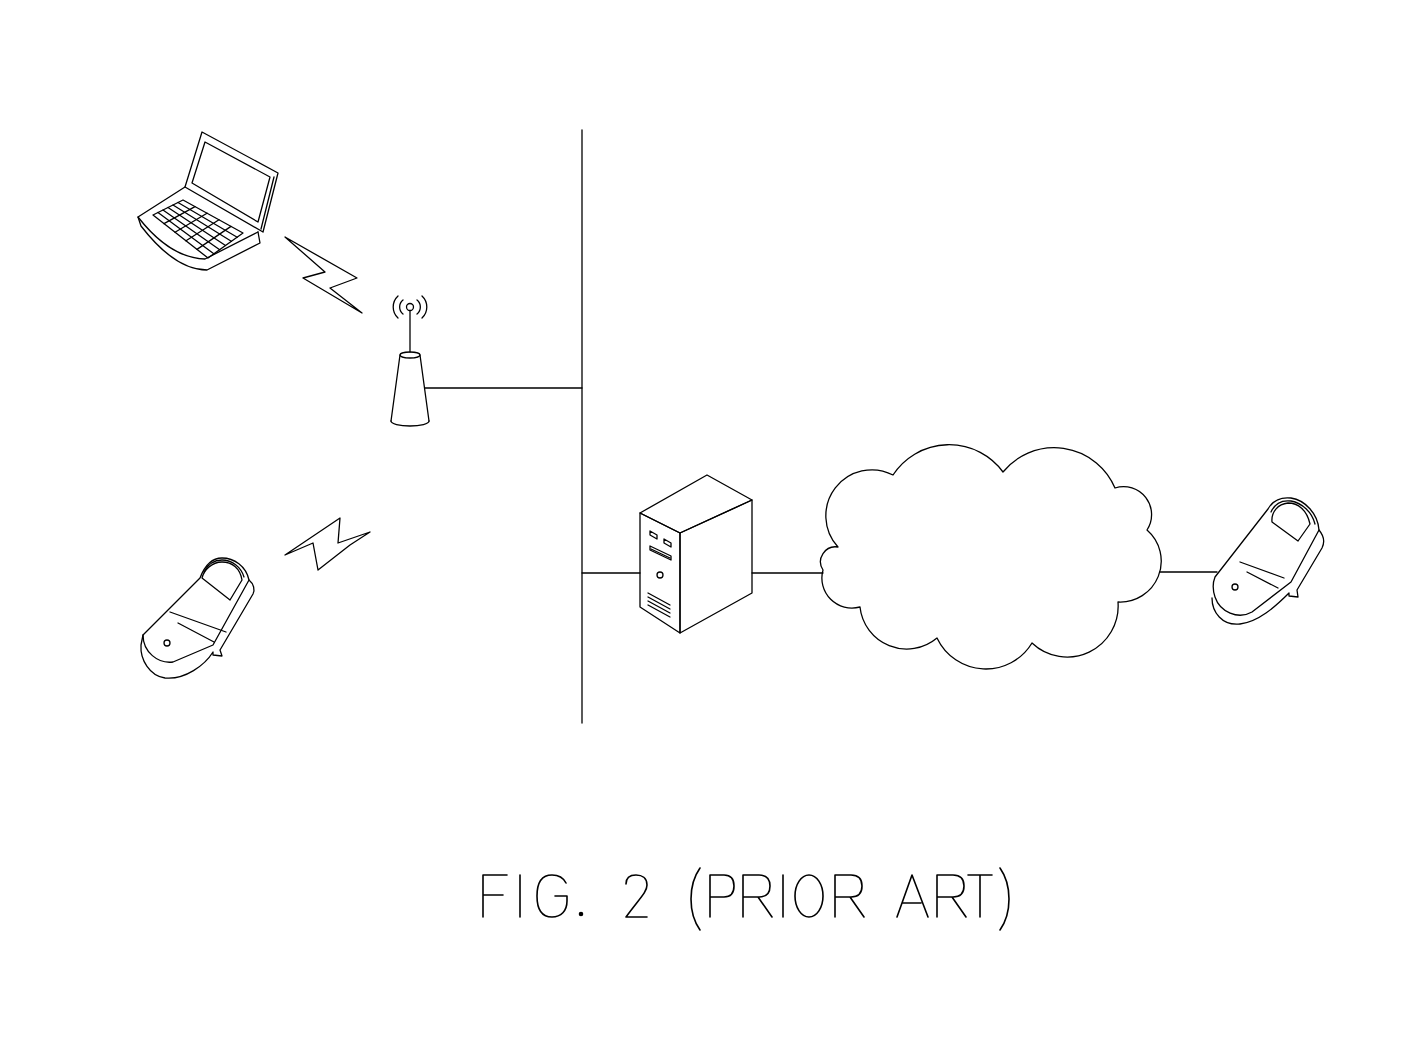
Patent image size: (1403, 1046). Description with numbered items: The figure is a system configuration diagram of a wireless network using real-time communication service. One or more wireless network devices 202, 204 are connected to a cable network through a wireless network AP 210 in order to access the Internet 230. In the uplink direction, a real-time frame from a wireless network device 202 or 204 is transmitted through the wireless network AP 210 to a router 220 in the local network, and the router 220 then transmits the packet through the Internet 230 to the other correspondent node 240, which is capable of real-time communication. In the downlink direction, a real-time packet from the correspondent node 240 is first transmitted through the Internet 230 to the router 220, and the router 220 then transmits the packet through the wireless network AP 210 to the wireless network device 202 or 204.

The wireless network device 202 is at (250, 137).
The wireless network device 204 is at (247, 747).
The wireless network AP 210 is at (410, 292).
The router 220 is at (680, 477).
The Internet 230 is at (991, 557).
The correspondent node 240 is at (1313, 495).